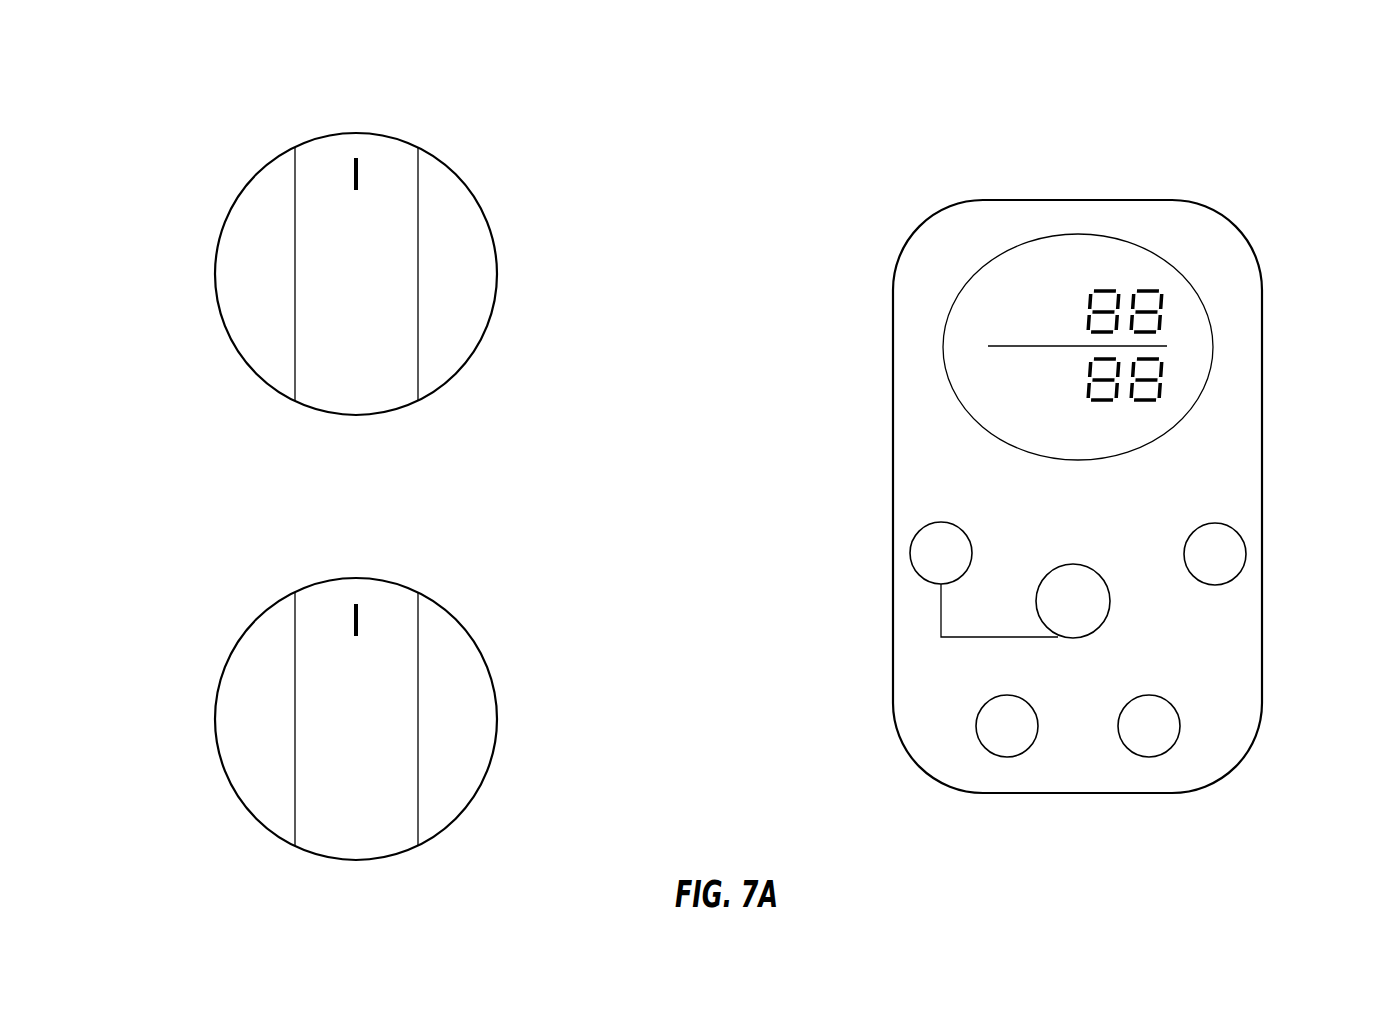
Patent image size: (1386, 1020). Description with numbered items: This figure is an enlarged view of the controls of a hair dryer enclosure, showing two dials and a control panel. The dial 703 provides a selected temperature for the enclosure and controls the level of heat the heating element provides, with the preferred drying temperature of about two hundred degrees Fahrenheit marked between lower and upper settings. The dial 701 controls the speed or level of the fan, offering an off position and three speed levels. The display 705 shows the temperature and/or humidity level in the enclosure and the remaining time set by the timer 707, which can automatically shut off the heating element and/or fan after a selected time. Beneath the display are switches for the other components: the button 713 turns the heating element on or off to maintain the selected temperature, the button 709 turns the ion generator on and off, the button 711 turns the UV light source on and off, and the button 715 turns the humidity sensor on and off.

The dial 701 is at (248, 630).
The dial 703 is at (248, 186).
The display 705 is at (1163, 200).
The timer 707 is at (922, 525).
The button 709 is at (1237, 529).
The button 711 is at (1180, 723).
The button 713 is at (1097, 570).
The button 715 is at (1025, 748).